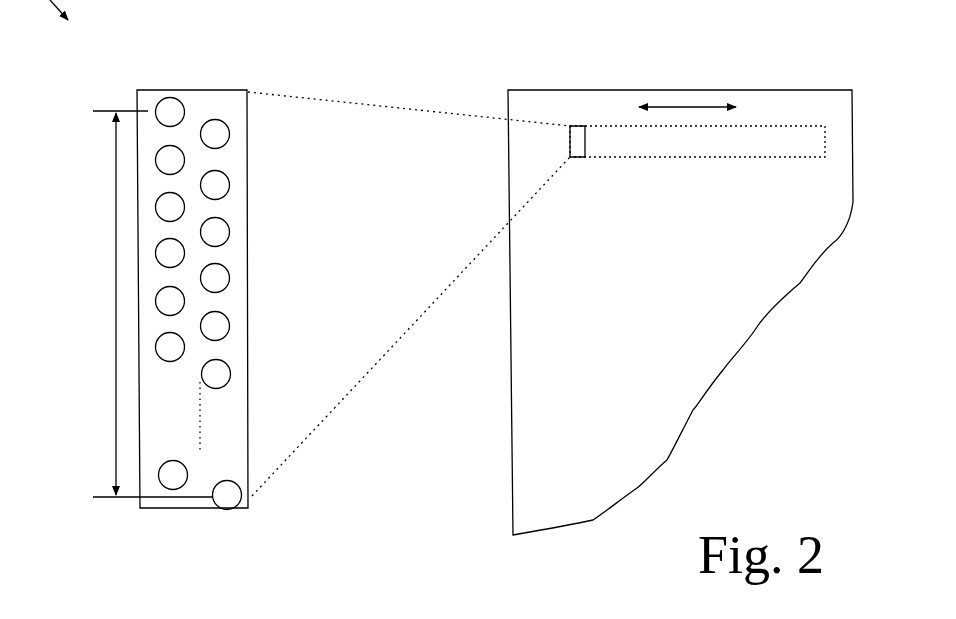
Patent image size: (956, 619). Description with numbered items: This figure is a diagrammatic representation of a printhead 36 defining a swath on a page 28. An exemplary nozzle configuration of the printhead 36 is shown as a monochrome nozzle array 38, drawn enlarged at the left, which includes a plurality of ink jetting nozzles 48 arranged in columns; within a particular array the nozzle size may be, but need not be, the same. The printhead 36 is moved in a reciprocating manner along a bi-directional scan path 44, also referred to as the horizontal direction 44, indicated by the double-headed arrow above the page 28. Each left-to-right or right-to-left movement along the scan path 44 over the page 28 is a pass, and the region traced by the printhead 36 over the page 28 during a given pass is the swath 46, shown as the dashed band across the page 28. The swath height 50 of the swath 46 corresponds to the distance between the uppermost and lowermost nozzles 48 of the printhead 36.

The page 28 is at (537, 88).
The printhead 36 is at (572, 127).
The nozzle array 38 is at (217, 90).
The bi-directional scan path 44 is at (698, 108).
The swath 46 is at (748, 137).
The ink jetting nozzles 48 is at (170, 97).
The swath height 50 is at (116, 284).